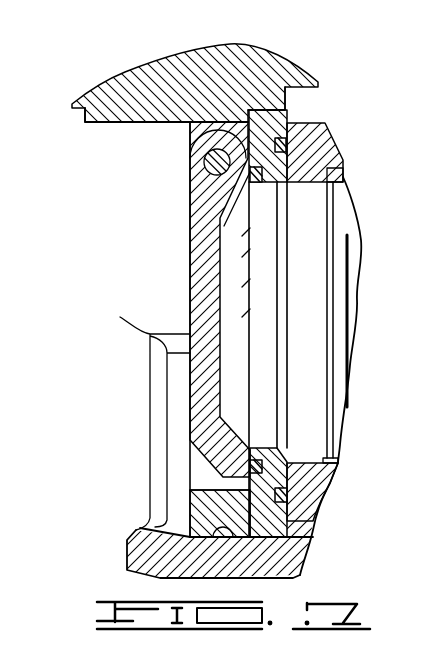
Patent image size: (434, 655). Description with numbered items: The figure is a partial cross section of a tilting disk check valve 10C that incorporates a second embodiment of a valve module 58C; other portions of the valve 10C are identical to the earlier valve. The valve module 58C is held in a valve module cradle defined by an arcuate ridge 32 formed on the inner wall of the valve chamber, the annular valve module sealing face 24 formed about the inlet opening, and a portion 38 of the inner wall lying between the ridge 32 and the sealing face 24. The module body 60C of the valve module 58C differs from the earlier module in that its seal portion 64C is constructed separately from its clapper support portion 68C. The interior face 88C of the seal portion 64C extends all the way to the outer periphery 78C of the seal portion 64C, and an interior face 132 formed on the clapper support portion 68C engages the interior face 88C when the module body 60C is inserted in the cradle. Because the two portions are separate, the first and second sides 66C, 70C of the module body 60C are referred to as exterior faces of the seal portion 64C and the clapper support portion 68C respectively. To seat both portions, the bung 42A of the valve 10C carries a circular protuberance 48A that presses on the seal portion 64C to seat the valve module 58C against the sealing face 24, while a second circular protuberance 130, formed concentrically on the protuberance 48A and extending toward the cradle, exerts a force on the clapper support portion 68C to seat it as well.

The valve 10C is at (296, 40).
The bung 42A is at (143, 75).
The outer periphery of the seal portion 78C is at (257, 90).
The second circular protuberance 130 is at (100, 122).
The circular protuberance 48A is at (273, 98).
The seal portion 64C is at (273, 119).
The valve module sealing face 24 is at (288, 190).
The valve module 58C is at (187, 252).
The arcuate ridge 32 is at (177, 388).
The interior face of the seal portion 88C is at (250, 455).
The first side of the module body 66C is at (280, 482).
The interior face of the clapper support portion 132 is at (250, 521).
The second side of the module body 70C is at (190, 505).
The clapper support portion 68C is at (190, 492).
The module body 60C is at (195, 515).
The portion of the inner wall 38 is at (233, 540).